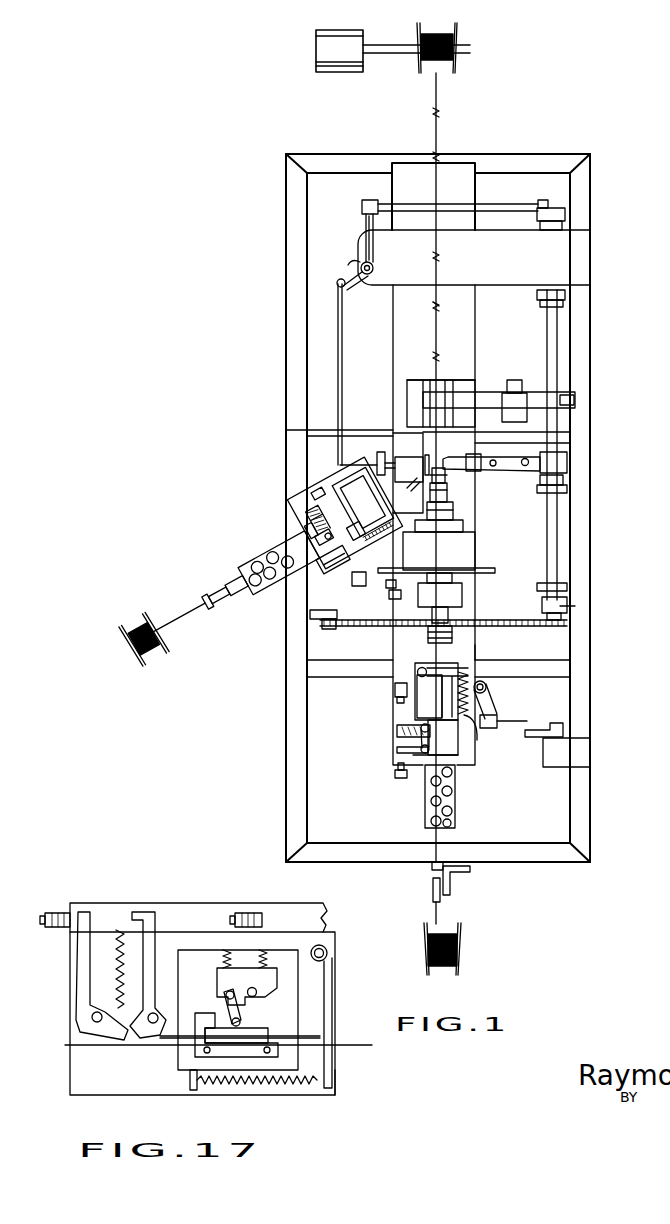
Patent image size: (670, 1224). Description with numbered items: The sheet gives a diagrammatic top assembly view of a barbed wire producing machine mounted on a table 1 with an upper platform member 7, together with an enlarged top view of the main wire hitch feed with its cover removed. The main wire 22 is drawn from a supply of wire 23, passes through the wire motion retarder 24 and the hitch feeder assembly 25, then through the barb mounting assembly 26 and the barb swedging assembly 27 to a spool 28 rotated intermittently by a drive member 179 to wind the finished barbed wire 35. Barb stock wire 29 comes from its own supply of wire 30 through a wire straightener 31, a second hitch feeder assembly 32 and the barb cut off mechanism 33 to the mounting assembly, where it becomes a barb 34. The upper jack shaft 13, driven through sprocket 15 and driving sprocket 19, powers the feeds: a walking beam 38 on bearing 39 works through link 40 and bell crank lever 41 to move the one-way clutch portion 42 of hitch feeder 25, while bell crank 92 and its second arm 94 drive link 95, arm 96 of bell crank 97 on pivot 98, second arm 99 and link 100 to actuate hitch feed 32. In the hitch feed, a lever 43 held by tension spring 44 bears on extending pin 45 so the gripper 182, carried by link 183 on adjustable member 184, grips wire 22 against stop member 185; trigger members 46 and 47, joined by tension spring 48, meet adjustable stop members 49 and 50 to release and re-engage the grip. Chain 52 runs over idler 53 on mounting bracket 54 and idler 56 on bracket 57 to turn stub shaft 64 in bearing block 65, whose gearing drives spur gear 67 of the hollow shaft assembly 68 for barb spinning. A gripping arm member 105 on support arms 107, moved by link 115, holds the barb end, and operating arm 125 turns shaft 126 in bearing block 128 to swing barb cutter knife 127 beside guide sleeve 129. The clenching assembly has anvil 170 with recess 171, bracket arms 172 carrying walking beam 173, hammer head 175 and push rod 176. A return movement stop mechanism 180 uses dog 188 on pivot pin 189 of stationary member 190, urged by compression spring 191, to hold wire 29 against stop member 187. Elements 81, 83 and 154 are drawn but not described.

In FIG. 1, the table 1 is at (591, 853).
In FIG. 1, the upper platform member 7 is at (478, 646).
In FIG. 1, the upper jack shaft 13 is at (546, 335).
In FIG. 1, the sprocket 15 is at (567, 489).
In FIG. 1, the sprocket 19 is at (575, 598).
In FIG. 1, the main wire 22 is at (441, 918).
In FIG. 17, the main wire 22 is at (370, 1046).
In FIG. 1, the supply of wire 23 is at (462, 940).
In FIG. 1, the wire motion retarder 24 is at (465, 808).
In FIG. 1, the hitch feeder assembly 25 is at (417, 676).
In FIG. 17, the hitch feeder assembly 25 is at (345, 1083).
In FIG. 1, the barb mounting assembly 26 is at (466, 493).
In FIG. 1, the barb swedging assembly 27 is at (461, 374).
In FIG. 1, the spool 28 is at (455, 34).
In FIG. 1, the barb stock wire 29 is at (182, 620).
In FIG. 1, the supply of wire 30 is at (152, 658).
In FIG. 1, the wire straightener 31 is at (240, 568).
In FIG. 1, the hitch feeder assembly 32 is at (276, 507).
In FIG. 1, the barb cut off mechanism 33 is at (400, 453).
In FIG. 1, the barb 34 is at (433, 306).
In FIG. 1, the barbed wire 35 is at (437, 123).
In FIG. 1, the walking beam 38 is at (537, 728).
In FIG. 1, the bearing 39 is at (556, 768).
In FIG. 1, the link 40 is at (497, 722).
In FIG. 1, the bell crank lever 41 is at (488, 700).
In FIG. 1, the one-way clutch portion 42 is at (395, 689).
In FIG. 17, the one-way clutch portion 42 is at (336, 946).
In FIG. 1, the lever 43 is at (444, 670).
In FIG. 17, the lever 43 is at (326, 982).
In FIG. 1, the tension spring 44 is at (477, 742).
In FIG. 17, the tension spring 44 is at (290, 1086).
In FIG. 1, the extending pin 45 is at (429, 696).
In FIG. 17, the extending pin 45 is at (308, 1033).
In FIG. 1, the trigger member 46 is at (397, 733).
In FIG. 17, the trigger member 46 is at (157, 912).
In FIG. 1, the trigger member 47 is at (404, 758).
In FIG. 17, the trigger member 47 is at (85, 912).
In FIG. 1, the tension spring 48 is at (404, 746).
In FIG. 17, the tension spring 48 is at (118, 930).
In FIG. 1, the adjustable stop member 49 is at (397, 700).
In FIG. 17, the adjustable stop member 49 is at (243, 912).
In FIG. 1, the adjustable stop member 50 is at (394, 773).
In FIG. 17, the adjustable stop member 50 is at (52, 912).
In FIG. 1, the chain 52 is at (512, 628).
In FIG. 1, the idler 53 is at (322, 626).
In FIG. 1, the mounting bracket 54 is at (312, 614).
In FIG. 1, the idler 56 is at (562, 616).
In FIG. 1, the bracket 57 is at (568, 603).
In FIG. 1, the stub shaft 64 is at (450, 612).
In FIG. 1, the bearing block 65 is at (463, 597).
In FIG. 1, the spur gear 67 is at (398, 590).
In FIG. 1, the hollow shaft assembly 68 is at (403, 602).
In FIG. 1, the housing 81 is at (482, 547).
In FIG. 1, the collar 83 is at (484, 576).
In FIG. 1, the bell crank 92 is at (565, 228).
In FIG. 1, the second arm 94 is at (555, 209).
In FIG. 1, the link 95 is at (490, 205).
In FIG. 1, the arm 96 is at (363, 221).
In FIG. 1, the bell crank 97 is at (365, 245).
In FIG. 1, the pivot 98 is at (374, 270).
In FIG. 1, the second arm 99 is at (346, 293).
In FIG. 1, the link 100 is at (343, 381).
In FIG. 1, the gripping arm member 105 is at (482, 470).
In FIG. 1, the support arms 107 is at (481, 452).
In FIG. 1, the link 115 is at (526, 458).
In FIG. 1, the operating arm 125 is at (380, 461).
In FIG. 1, the shaft 126 is at (378, 463).
In FIG. 1, the barb cutter knife 127 is at (430, 466).
In FIG. 1, the bearing block 128 is at (411, 456).
In FIG. 1, the guide sleeve 129 is at (416, 486).
In FIG. 1, the collar 154 is at (450, 503).
In FIG. 1, the anvil 170 is at (407, 397).
In FIG. 1, the recess 171 is at (452, 385).
In FIG. 1, the bracket arms 172 is at (521, 381).
In FIG. 1, the walking beam 173 is at (486, 398).
In FIG. 1, the hammer head 175 is at (433, 388).
In FIG. 1, the push rod 176 is at (577, 401).
In FIG. 1, the drive member 179 is at (334, 86).
In FIG. 1, the return movement stop mechanism 180 is at (303, 588).
In FIG. 17, the gripper 182 is at (256, 1030).
In FIG. 17, the link 183 is at (238, 1010).
In FIG. 17, the adjustable member 184 is at (230, 985).
In FIG. 17, the stop member 185 is at (226, 1050).
In FIG. 1, the stop member 187 is at (270, 529).
In FIG. 1, the dog 188 is at (283, 552).
In FIG. 1, the pivot pin 189 is at (347, 588).
In FIG. 1, the stationary member 190 is at (420, 577).
In FIG. 1, the compression spring 191 is at (338, 538).